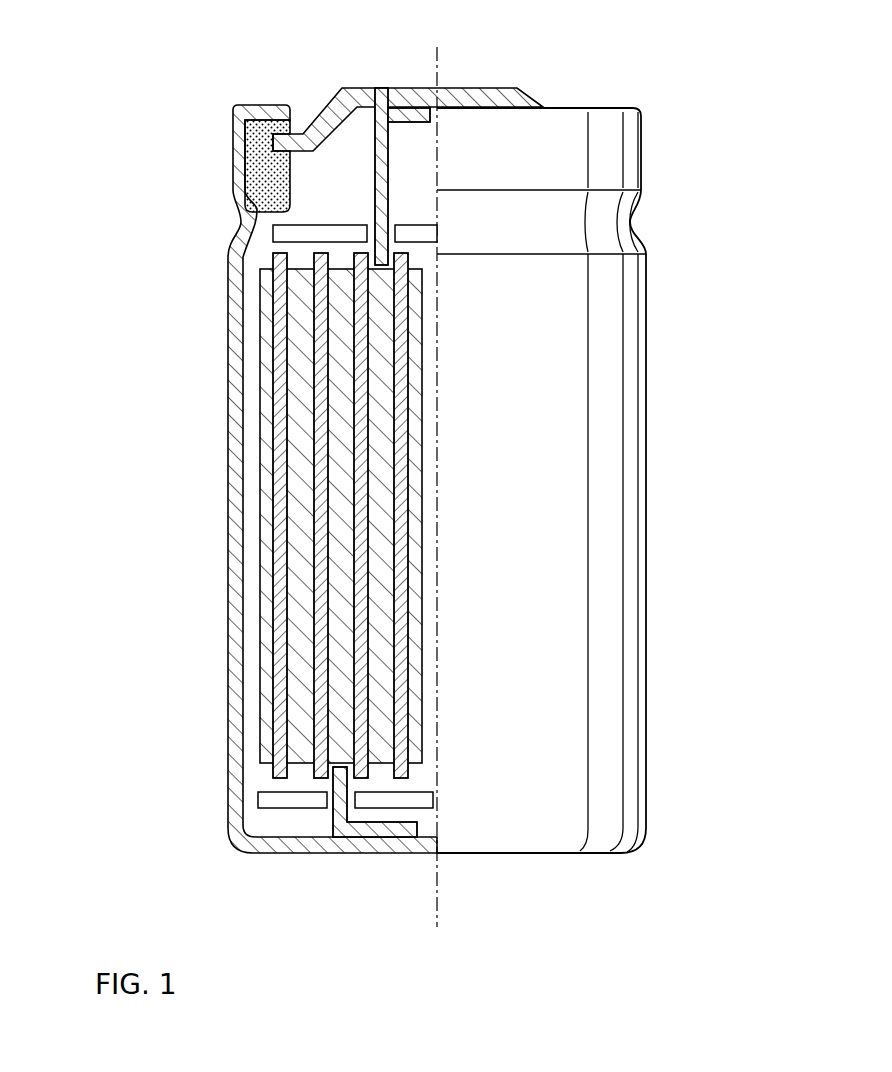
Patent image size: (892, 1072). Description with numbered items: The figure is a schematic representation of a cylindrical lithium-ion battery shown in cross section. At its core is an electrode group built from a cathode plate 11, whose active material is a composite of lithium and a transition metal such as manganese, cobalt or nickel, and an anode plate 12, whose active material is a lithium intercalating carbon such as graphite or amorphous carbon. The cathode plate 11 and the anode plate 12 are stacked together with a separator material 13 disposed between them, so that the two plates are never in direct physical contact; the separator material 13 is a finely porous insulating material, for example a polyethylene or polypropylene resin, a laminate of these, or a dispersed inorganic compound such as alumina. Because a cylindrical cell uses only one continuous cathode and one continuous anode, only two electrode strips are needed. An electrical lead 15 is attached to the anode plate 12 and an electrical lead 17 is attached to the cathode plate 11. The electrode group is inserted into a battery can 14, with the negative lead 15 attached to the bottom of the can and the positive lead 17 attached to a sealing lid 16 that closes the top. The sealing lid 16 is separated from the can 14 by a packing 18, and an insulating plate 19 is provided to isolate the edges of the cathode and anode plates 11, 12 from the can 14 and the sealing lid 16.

The cathode plate 11 is at (282, 596).
The anode plate 12 is at (265, 650).
The separator material 13 is at (280, 772).
The battery can 14 is at (236, 542).
The electrical lead 15 is at (340, 818).
The sealing lid 16 is at (492, 88).
The electrical lead 17 is at (377, 176).
The packing 18 is at (287, 104).
The insulating plate 19 is at (287, 233).